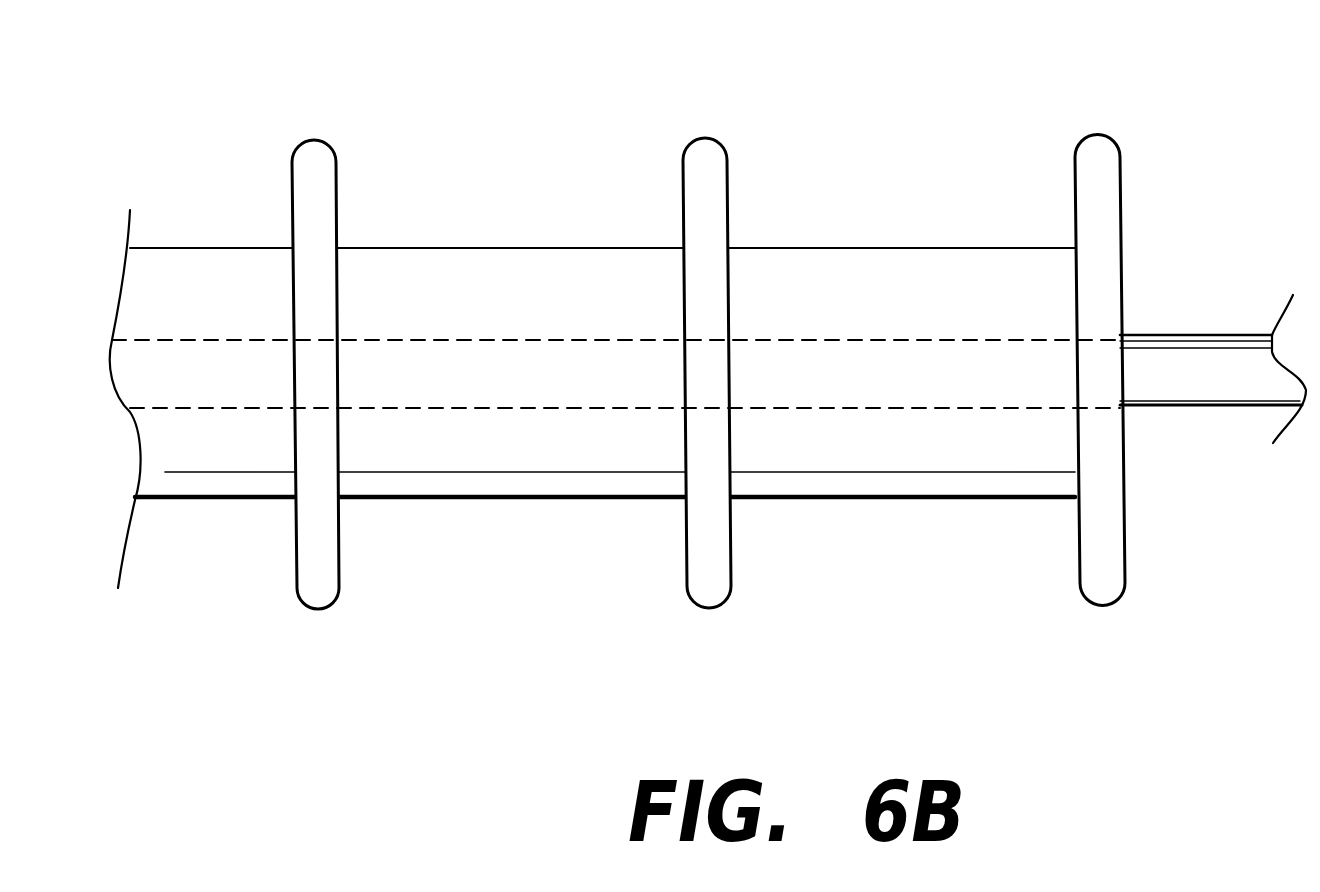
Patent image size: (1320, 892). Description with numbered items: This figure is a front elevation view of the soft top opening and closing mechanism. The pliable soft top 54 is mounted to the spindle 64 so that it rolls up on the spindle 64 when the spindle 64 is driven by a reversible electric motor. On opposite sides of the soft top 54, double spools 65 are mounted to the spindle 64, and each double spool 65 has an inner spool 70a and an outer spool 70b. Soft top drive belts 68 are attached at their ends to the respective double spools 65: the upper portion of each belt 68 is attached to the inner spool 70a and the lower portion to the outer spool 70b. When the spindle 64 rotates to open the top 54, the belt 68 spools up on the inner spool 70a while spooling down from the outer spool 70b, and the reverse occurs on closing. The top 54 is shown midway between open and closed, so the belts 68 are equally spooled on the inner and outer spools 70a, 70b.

The pliable soft top 54 is at (240, 248).
The spindle 64 is at (1248, 333).
The double spool 65 is at (728, 385).
The soft top drive belt 68 is at (527, 247).
The inner spool 70a is at (325, 610).
The outer spool 70b is at (1125, 540).